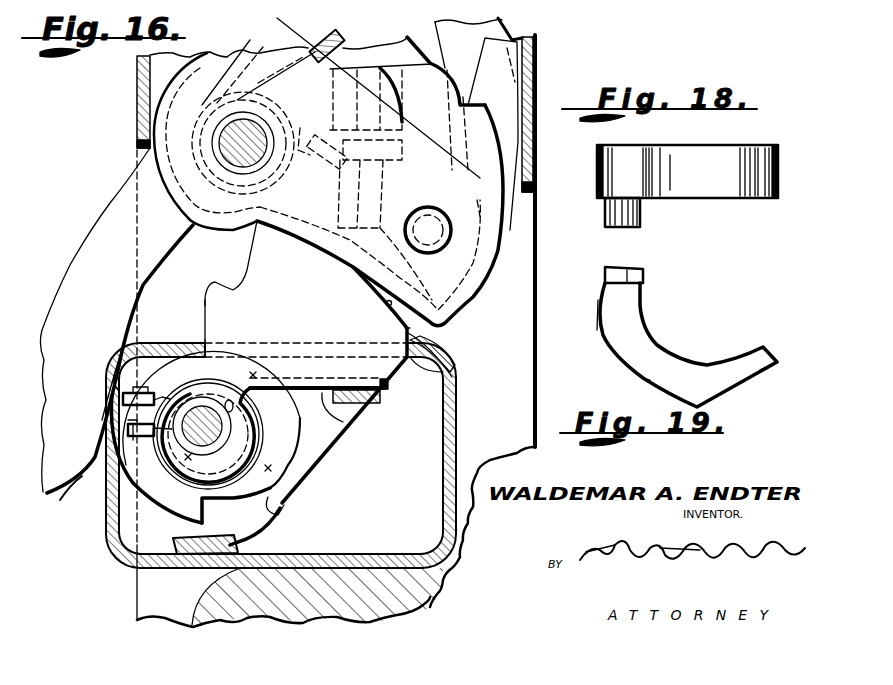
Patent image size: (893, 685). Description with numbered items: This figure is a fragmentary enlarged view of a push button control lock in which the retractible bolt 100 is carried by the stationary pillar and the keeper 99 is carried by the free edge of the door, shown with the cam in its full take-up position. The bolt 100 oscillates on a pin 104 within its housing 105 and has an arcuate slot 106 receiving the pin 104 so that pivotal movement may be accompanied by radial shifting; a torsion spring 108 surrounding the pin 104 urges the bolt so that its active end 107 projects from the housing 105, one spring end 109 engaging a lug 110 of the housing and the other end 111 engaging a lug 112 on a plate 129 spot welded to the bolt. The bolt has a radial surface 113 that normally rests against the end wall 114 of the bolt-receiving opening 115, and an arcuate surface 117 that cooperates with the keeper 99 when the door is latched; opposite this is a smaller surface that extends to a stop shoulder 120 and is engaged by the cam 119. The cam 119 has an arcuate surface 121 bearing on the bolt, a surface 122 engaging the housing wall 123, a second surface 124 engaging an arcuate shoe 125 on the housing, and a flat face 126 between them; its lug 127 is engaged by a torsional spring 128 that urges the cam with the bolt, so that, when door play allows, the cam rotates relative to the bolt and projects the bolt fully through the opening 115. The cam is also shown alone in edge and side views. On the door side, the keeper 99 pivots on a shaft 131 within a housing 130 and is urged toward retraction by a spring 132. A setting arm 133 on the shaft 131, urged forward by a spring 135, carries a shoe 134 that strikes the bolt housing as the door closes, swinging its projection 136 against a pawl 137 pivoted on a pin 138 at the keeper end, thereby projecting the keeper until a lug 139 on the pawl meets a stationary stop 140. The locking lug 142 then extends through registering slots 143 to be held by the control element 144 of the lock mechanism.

In FIG. 16, the keeper 99 is at (475, 297).
In FIG. 16, the bolt 100 is at (410, 328).
In FIG. 16, the pin 104 is at (215, 432).
In FIG. 16, the housing 105 is at (455, 390).
In FIG. 16, the arcuate slot 106 is at (229, 400).
In FIG. 16, the active end 107 is at (306, 289).
In FIG. 16, the torsion spring 108 is at (260, 437).
In FIG. 16, the spring end 109 is at (343, 422).
In FIG. 16, the lug 110 is at (388, 395).
In FIG. 16, the spring end 111 is at (128, 425).
In FIG. 16, the lug 112 is at (132, 431).
In FIG. 16, the radial surface 113 is at (205, 303).
In FIG. 16, the end wall 114 is at (205, 343).
In FIG. 16, the bolt-receiving opening 115 is at (452, 362).
In FIG. 16, the arcuate bolt surface 117 is at (386, 305).
In FIG. 16, the cam 119 is at (245, 516).
In FIG. 18, the cam 119 is at (732, 147).
In FIG. 19, the cam 119 is at (738, 391).
In FIG. 16, the stop shoulder 120 is at (286, 510).
In FIG. 18, the arcuate surface 121 is at (717, 182).
In FIG. 19, the arcuate surface 121 is at (740, 352).
In FIG. 19, the cam surface 122 is at (590, 320).
In FIG. 16, the wall 123 is at (170, 493).
In FIG. 19, the second cam surface 124 is at (758, 380).
In FIG. 16, the arcuate shoe 125 is at (175, 548).
In FIG. 19, the flat face 126 is at (650, 378).
In FIG. 16, the lug 127 is at (123, 396).
In FIG. 18, the lug 127 is at (643, 218).
In FIG. 19, the lug 127 is at (625, 283).
In FIG. 16, the torsional spring 128 is at (117, 368).
In FIG. 16, the plate 129 is at (137, 522).
In FIG. 16, the housing 130 is at (540, 40).
In FIG. 16, the shaft 131 is at (220, 127).
In FIG. 16, the spring 132 is at (262, 30).
In FIG. 16, the setting arm 133 is at (128, 196).
In FIG. 16, the shoe 134 is at (100, 452).
In FIG. 16, the spring 135 is at (340, 38).
In FIG. 16, the projection 136 is at (375, 95).
In FIG. 16, the pawl 137 is at (493, 72).
In FIG. 16, the pin 138 is at (425, 227).
In FIG. 16, the lug 139 is at (385, 162).
In FIG. 16, the stop 140 is at (269, 143).
In FIG. 16, the locking lug 142 is at (485, 150).
In FIG. 16, the slots 143 is at (537, 60).
In FIG. 16, the control element 144 is at (508, 25).